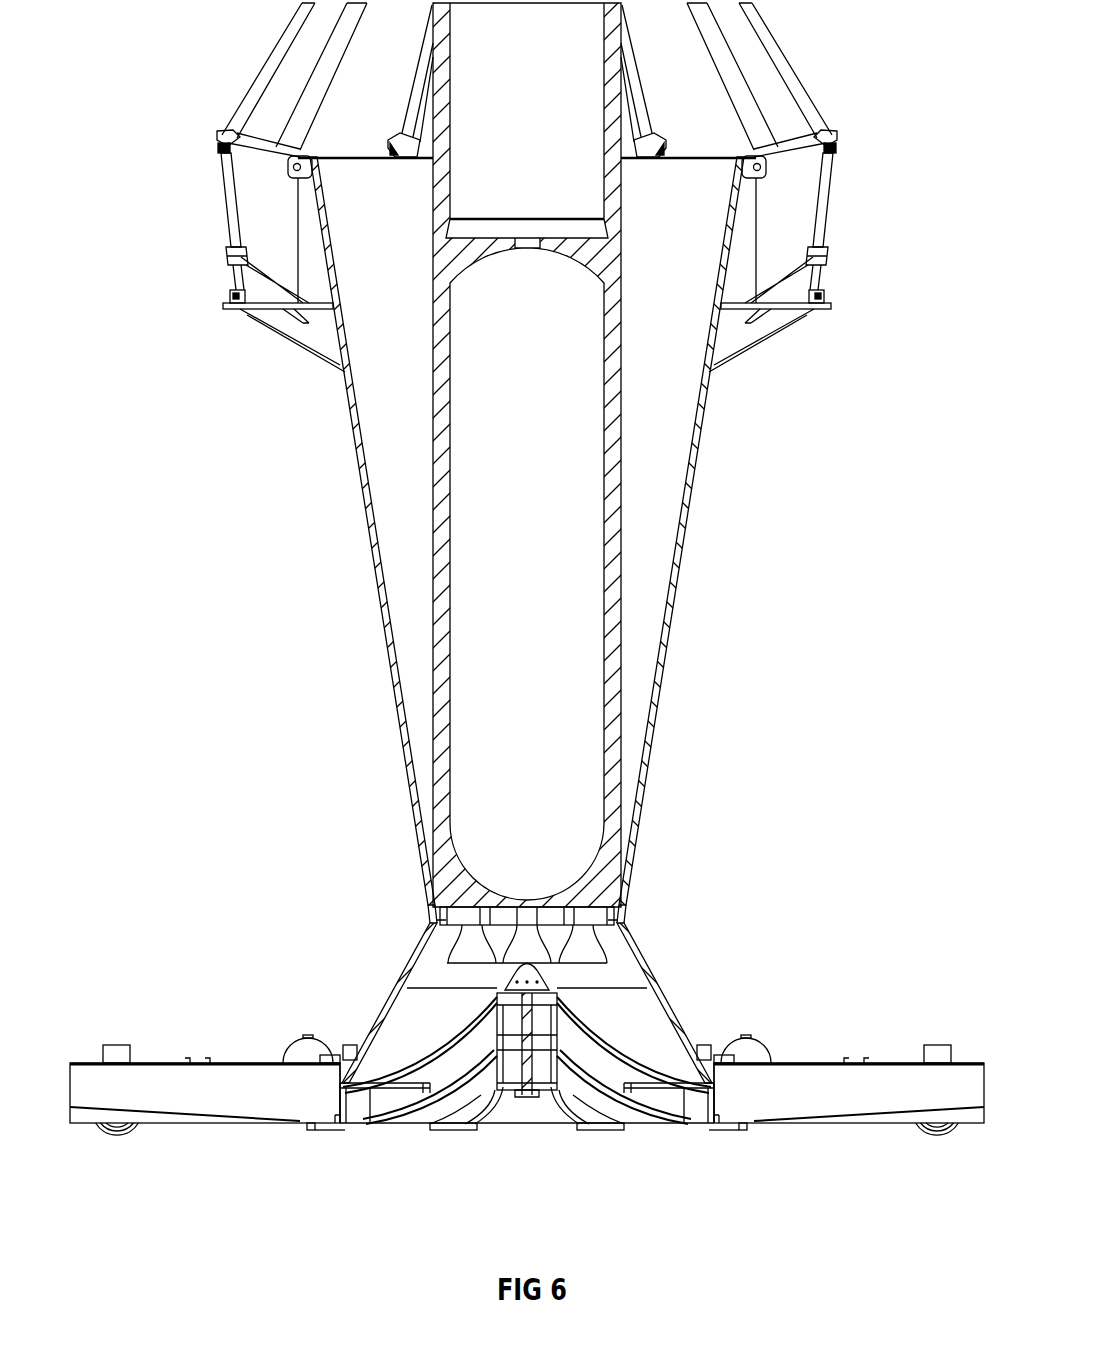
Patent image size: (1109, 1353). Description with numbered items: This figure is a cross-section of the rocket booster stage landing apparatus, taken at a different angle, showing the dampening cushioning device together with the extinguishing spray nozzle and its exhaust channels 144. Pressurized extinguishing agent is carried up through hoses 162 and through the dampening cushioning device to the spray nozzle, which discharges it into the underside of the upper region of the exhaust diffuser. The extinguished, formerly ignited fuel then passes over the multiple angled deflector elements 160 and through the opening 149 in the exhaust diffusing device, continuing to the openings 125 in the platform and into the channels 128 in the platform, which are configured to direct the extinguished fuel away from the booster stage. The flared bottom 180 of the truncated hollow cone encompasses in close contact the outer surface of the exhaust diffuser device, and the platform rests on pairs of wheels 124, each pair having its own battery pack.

The wheels 124 is at (927, 1138).
The openings 125 is at (717, 1100).
The channels 128 is at (857, 1094).
The exhaust channels 144 is at (642, 1050).
The opening 149 is at (712, 1053).
The angled deflector elements 160 is at (614, 987).
The hoses 162 is at (640, 1128).
The flared bottom 180 is at (642, 940).